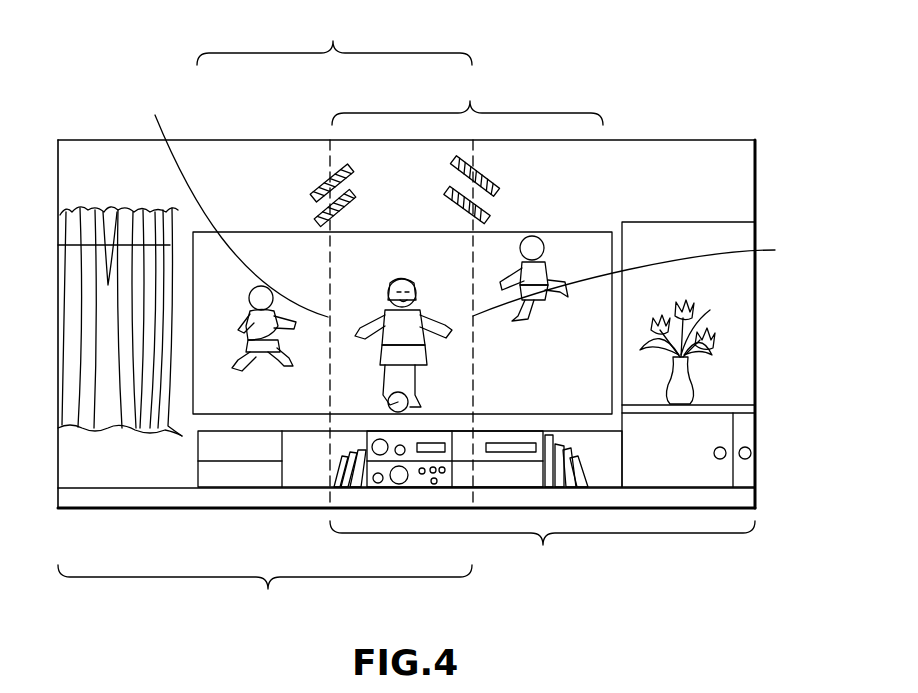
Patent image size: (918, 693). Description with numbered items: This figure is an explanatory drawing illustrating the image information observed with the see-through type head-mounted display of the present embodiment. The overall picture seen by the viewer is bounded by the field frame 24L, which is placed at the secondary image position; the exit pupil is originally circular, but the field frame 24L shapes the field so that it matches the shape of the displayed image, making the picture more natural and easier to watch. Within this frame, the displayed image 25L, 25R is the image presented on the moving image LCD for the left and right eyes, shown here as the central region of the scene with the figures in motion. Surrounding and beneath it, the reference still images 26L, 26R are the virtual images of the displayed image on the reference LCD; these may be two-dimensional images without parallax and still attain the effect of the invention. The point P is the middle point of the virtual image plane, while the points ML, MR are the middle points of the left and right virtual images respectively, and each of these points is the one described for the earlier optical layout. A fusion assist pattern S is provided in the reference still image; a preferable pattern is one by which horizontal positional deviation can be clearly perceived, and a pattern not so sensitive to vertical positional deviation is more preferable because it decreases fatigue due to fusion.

The field frame 24L is at (411, 295).
The displayed image on the moving image LCD 25L is at (334, 40).
The displayed image on the moving image LCD 25R is at (467, 100).
The virtual image of the displayed image on the reference LCD 26L is at (265, 593).
The virtual image of the displayed image on the reference LCD 26R is at (542, 551).
The middle point of the virtual image ML is at (233, 201).
The middle point of the virtual image MR is at (644, 277).
The fusion assist pattern S is at (336, 170).
The middle point of the virtual image plane P is at (404, 278).